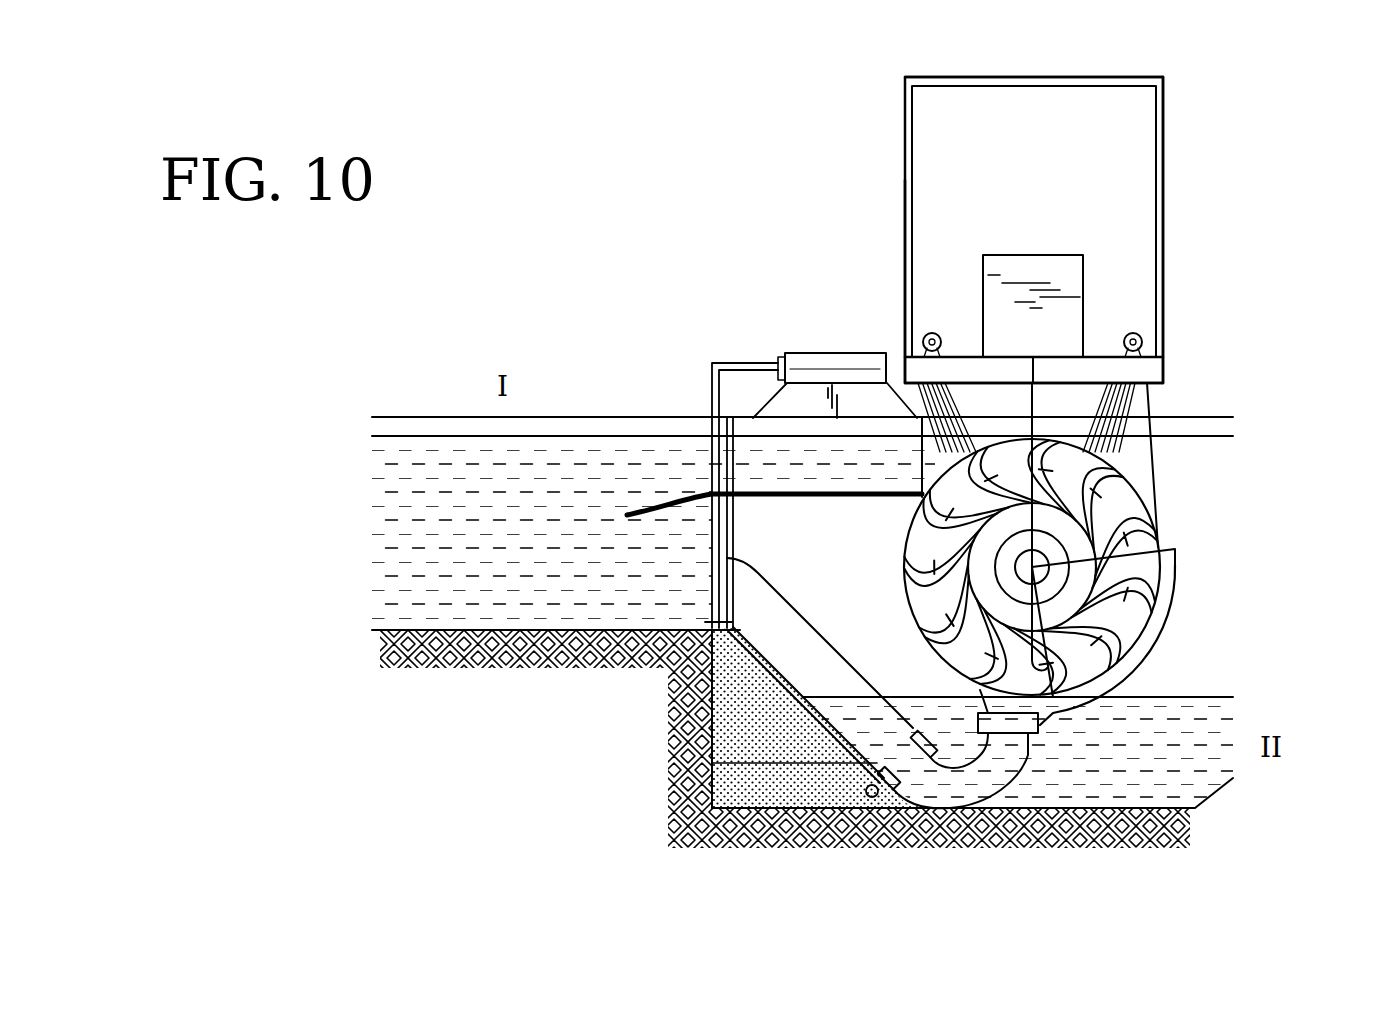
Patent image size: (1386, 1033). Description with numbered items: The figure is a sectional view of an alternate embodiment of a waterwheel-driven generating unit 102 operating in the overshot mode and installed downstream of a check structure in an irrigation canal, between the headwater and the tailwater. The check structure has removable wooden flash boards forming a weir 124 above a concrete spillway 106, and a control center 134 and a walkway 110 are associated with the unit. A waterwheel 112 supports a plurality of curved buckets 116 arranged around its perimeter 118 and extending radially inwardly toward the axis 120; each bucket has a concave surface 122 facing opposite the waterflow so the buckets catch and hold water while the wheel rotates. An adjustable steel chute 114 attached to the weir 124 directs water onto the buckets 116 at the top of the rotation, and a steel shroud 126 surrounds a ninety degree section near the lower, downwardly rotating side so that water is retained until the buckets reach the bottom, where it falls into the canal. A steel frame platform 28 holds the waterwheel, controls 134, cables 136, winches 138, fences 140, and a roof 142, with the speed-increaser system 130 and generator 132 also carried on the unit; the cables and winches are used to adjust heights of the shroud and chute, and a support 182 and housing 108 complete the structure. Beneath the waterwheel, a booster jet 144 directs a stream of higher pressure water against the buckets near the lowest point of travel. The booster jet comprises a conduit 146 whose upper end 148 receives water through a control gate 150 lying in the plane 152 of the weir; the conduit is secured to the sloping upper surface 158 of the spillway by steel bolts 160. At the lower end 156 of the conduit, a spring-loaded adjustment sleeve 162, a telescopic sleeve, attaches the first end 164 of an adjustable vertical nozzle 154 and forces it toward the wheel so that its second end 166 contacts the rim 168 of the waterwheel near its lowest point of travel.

The platform 28 is at (1165, 365).
The waterwheel-driven generating unit 102 is at (1252, 380).
The concrete spillway 106 is at (723, 775).
The housing 108 is at (1175, 168).
The walkway 110 is at (815, 352).
The waterwheel 112 is at (1127, 477).
The adjustable steel chute 114 is at (750, 490).
The curved buckets 116 is at (1110, 507).
The perimeter 118 is at (938, 567).
The axis 120 is at (1013, 567).
The concave surface 122 is at (932, 590).
The weir 124 is at (748, 493).
The steel shroud 126 is at (1177, 600).
The speed-increaser system 130 is at (1180, 573).
The generator 132 is at (1045, 575).
The control center 134 is at (1030, 268).
The cables 136 is at (1150, 408).
The winches 138 is at (1131, 333).
The fences 140 is at (1165, 257).
The roof 142 is at (1143, 77).
The booster jet 144 is at (765, 598).
The conduit 146 is at (842, 690).
The upper end 148 is at (804, 700).
The control gate 150 is at (712, 605).
The plane 152 is at (712, 553).
The adjustable vertical nozzle 154 is at (962, 697).
The lower end 156 is at (990, 777).
The sloping upper surface 158 is at (822, 730).
The steel bolts 160 is at (872, 797).
The spring-loaded adjustment sleeve 162 is at (1040, 723).
The first end 164 is at (1038, 755).
The second end 166 is at (1060, 700).
The rim 168 is at (920, 627).
The support cable 182 is at (905, 222).